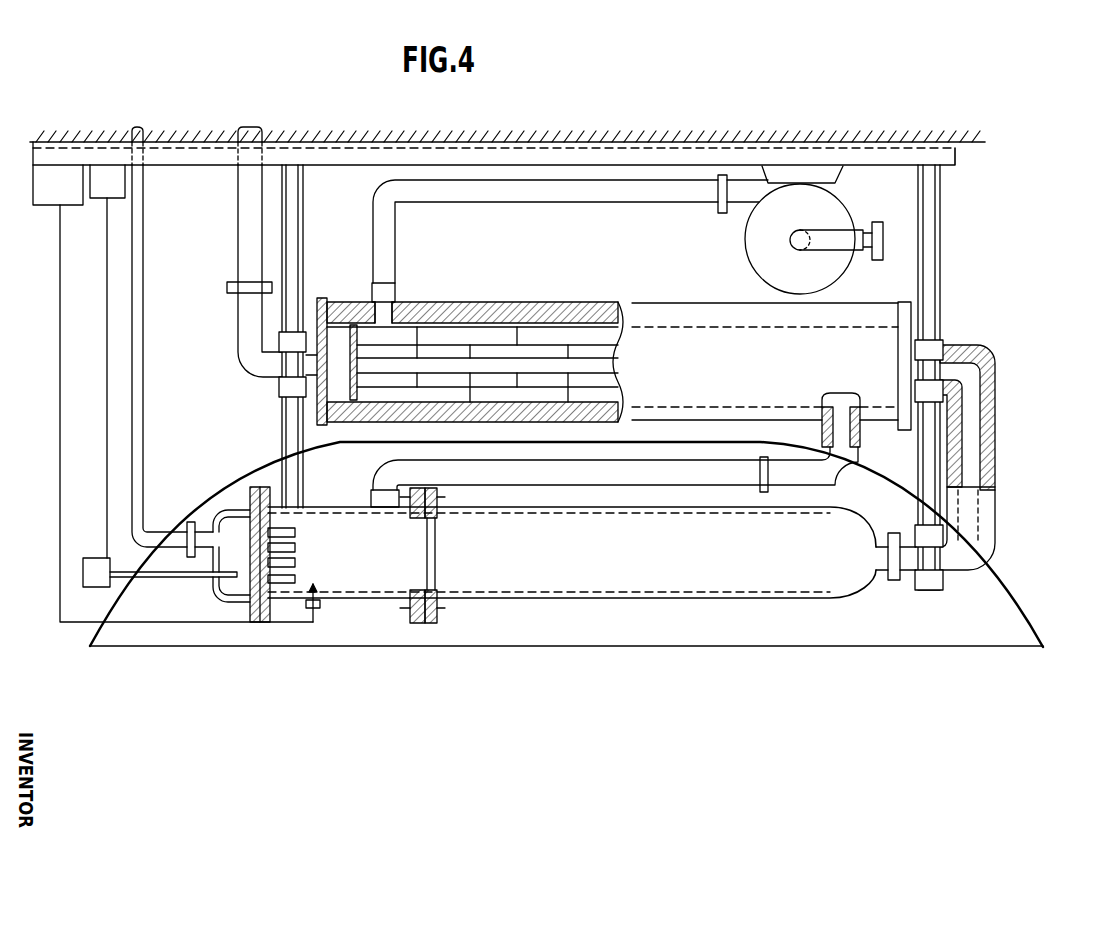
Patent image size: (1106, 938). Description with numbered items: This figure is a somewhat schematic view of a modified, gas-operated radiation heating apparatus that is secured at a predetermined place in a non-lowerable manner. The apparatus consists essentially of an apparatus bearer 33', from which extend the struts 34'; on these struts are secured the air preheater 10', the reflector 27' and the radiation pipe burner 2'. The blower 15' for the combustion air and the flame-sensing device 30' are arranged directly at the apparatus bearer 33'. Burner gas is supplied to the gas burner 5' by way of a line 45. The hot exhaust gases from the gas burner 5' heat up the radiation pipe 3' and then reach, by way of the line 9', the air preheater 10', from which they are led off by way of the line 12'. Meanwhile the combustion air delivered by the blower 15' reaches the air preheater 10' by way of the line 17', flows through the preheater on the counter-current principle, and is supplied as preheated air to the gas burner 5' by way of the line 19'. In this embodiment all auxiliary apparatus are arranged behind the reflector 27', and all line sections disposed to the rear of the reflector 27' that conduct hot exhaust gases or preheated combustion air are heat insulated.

The line 45 is at (143, 133).
The line 12' is at (254, 235).
The line 9' is at (515, 356).
The flame-sensing device 30' is at (100, 210).
The apparatus bearer 33' is at (494, 180).
The struts 34' is at (639, 377).
The line 17' is at (570, 249).
The blower 15' is at (797, 230).
The air preheater 10' is at (614, 360).
The line 19' is at (623, 478).
The reflector 27' is at (579, 544).
The radiation pipe burner 2' is at (540, 585).
The radiation pipe 3' is at (592, 595).
The gas burner 5' is at (301, 633).